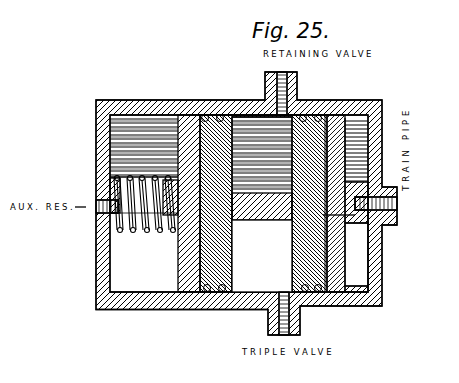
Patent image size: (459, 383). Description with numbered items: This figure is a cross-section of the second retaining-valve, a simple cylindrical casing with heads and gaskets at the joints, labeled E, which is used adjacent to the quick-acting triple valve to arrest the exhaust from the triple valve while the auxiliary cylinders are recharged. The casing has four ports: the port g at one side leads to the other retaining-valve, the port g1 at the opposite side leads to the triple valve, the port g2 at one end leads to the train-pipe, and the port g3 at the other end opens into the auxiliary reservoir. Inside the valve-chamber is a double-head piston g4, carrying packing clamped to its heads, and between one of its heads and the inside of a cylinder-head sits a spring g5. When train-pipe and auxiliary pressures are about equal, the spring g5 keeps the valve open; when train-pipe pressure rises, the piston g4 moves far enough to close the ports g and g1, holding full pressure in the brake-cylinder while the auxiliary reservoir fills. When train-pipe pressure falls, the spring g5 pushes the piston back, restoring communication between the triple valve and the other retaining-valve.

The valve casing E is at (136, 106).
The port g is at (265, 80).
The port g1 is at (267, 327).
The port g2 is at (397, 217).
The port g3 is at (97, 212).
The double-head piston g4 is at (268, 214).
The spring g5 is at (147, 231).